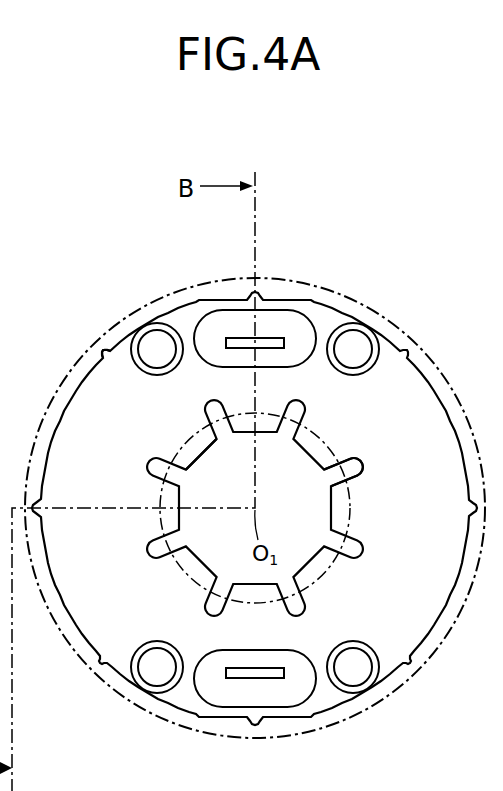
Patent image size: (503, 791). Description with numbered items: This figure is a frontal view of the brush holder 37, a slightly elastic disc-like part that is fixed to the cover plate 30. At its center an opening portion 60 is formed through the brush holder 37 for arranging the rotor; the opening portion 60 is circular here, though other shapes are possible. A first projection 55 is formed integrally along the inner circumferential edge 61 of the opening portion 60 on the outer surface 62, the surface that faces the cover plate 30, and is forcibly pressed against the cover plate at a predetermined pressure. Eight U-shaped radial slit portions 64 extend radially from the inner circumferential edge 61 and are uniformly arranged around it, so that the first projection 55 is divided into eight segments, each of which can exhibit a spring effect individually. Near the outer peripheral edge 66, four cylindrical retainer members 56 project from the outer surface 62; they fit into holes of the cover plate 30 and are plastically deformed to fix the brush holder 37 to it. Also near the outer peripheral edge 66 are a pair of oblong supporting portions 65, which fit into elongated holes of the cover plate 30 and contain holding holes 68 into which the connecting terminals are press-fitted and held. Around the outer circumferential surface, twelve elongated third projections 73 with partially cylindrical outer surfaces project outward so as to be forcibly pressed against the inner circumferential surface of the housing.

The cover plate 30 is at (262, 461).
The brush holder 37 is at (362, 302).
The first projection 55 is at (323, 443).
The retainer members 56 is at (357, 663).
The opening portion 60 is at (290, 508).
The inner circumferential edge 61 is at (204, 459).
The outer surface 62 is at (254, 473).
The radial slit portions 64 is at (352, 465).
The supporting portions 65 is at (276, 466).
The outer peripheral edge 66 is at (452, 395).
The holding holes 68 is at (273, 337).
The third projections 73 is at (101, 350).